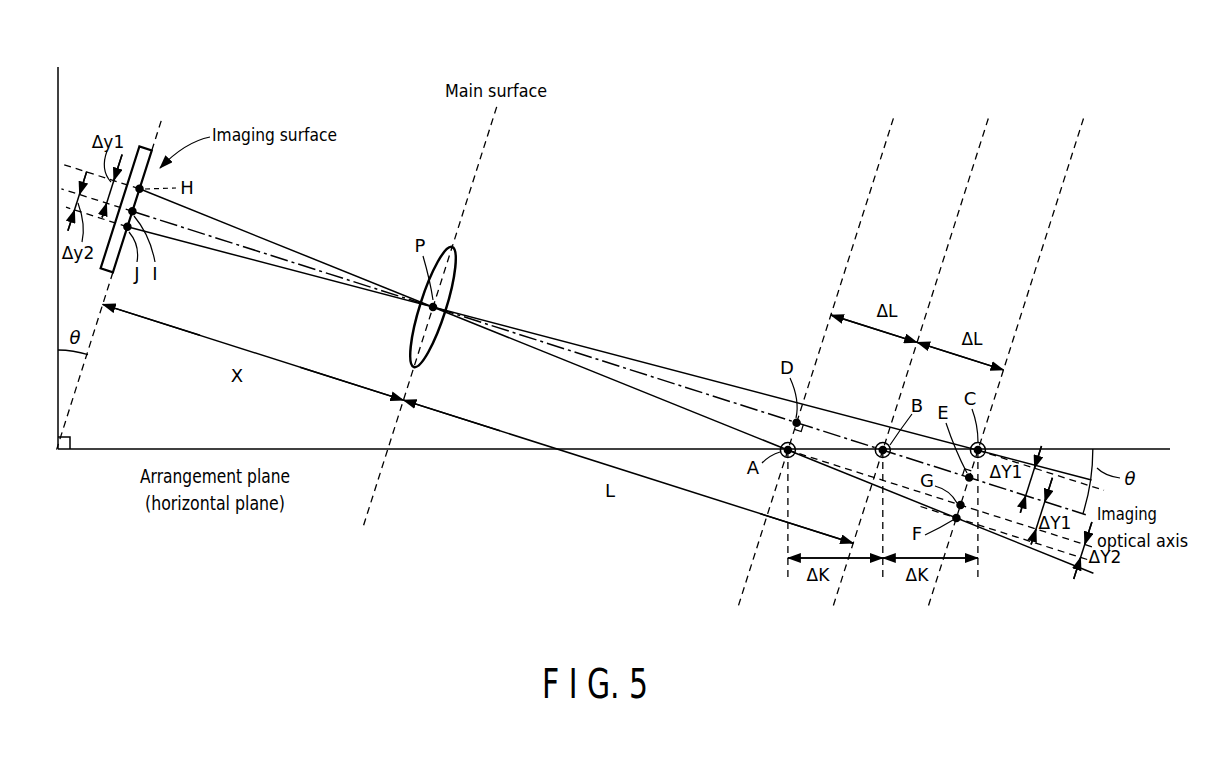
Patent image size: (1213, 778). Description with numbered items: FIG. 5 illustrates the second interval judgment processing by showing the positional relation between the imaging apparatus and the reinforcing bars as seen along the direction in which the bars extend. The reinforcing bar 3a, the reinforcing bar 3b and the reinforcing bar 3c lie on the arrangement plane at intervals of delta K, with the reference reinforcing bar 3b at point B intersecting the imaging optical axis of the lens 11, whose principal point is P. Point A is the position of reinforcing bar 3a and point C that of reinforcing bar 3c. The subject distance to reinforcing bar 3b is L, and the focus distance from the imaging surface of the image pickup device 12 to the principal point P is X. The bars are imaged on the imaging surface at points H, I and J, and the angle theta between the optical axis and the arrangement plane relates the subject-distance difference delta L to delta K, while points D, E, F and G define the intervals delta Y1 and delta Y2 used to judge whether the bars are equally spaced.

The image pickup device 12 is at (146, 146).
The lens 11 is at (457, 258).
The reinforcing bar 3a is at (790, 458).
The reinforcing bar 3b is at (883, 441).
The reinforcing bar 3c is at (986, 443).